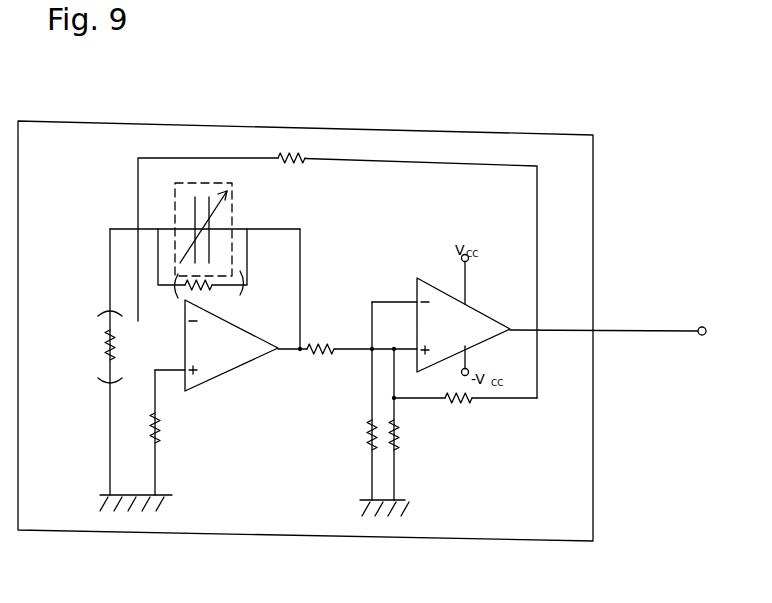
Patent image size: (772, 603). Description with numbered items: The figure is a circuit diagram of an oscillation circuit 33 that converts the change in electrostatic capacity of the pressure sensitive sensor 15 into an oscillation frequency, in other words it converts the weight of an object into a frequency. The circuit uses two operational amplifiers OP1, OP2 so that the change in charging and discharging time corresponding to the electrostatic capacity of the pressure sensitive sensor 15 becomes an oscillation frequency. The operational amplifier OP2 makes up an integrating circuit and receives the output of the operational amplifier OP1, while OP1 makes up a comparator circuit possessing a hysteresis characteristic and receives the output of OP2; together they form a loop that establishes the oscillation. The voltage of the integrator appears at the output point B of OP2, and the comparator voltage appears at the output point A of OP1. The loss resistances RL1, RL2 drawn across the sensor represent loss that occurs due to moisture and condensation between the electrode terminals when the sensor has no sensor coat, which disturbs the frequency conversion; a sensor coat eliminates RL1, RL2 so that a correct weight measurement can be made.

The pressure sensitive sensor 15 is at (232, 200).
The oscillation circuit 33 is at (572, 134).
The loss resistance RL1 is at (202, 269).
The loss resistance RL2 is at (96, 347).
The operational amplifier OP1 is at (463, 325).
The operational amplifier OP2 is at (231, 345).
The output point A is at (705, 334).
The output point B is at (298, 351).